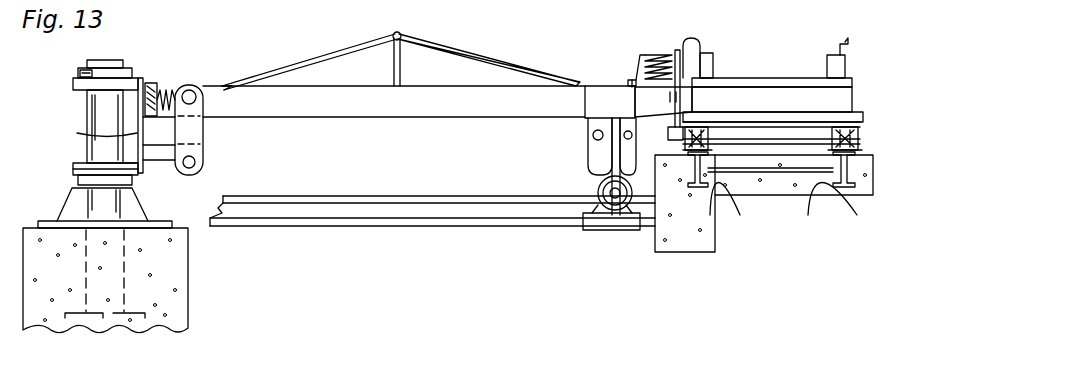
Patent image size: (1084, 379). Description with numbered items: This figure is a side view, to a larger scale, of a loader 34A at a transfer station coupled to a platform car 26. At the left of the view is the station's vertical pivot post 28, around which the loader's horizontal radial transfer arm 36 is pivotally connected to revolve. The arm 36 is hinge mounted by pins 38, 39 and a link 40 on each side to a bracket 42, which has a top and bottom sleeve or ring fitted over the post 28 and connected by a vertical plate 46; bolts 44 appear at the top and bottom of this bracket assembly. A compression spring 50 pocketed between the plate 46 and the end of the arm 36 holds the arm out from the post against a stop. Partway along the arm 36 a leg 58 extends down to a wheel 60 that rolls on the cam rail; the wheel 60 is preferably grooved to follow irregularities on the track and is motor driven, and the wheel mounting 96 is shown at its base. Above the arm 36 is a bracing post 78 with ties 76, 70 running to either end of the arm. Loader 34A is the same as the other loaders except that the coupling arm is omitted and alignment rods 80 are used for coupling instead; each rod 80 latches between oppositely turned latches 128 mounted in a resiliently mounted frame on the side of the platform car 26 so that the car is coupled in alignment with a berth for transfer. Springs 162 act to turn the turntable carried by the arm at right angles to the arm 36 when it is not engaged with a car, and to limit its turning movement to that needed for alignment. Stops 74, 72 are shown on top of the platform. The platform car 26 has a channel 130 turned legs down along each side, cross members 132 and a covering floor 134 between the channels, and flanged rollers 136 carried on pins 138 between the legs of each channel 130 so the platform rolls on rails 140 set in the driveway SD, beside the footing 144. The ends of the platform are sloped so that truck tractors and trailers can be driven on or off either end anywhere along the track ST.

The platform car 26 is at (858, 116).
The vertical pivot post 28 is at (87, 105).
The loader 34A is at (318, 108).
The horizontal radial transfer arm 36 is at (388, 115).
The pin 38 is at (203, 86).
The pin 39 is at (195, 163).
The link 40 is at (200, 137).
The bracket 42 is at (160, 172).
The bolts 44 is at (80, 67).
The vertical plate 46 is at (83, 137).
The compression spring 50 is at (165, 86).
The leg 58 is at (623, 157).
The wheel 60 is at (597, 187).
The right truss tie 70 is at (458, 8).
The right stop bracket 72 is at (835, 66).
The left stop bracket 74 is at (712, 66).
The left truss tie 76 is at (416, 8).
The truss post 78 is at (345, 43).
The alignment rod 80 is at (678, 50).
The wheel bracket 96 is at (635, 232).
The latch 128 is at (667, 130).
The channel 130 is at (880, 118).
The cross member 132 is at (763, 137).
The covering floor 134 is at (847, 123).
The flanged roller 136 is at (855, 151).
The pin 138 is at (855, 148).
The rail 140 is at (722, 153).
The footing 144 is at (653, 210).
The spring 162 is at (645, 53).
The driveway SD is at (738, 2).
The track ST is at (818, 4).